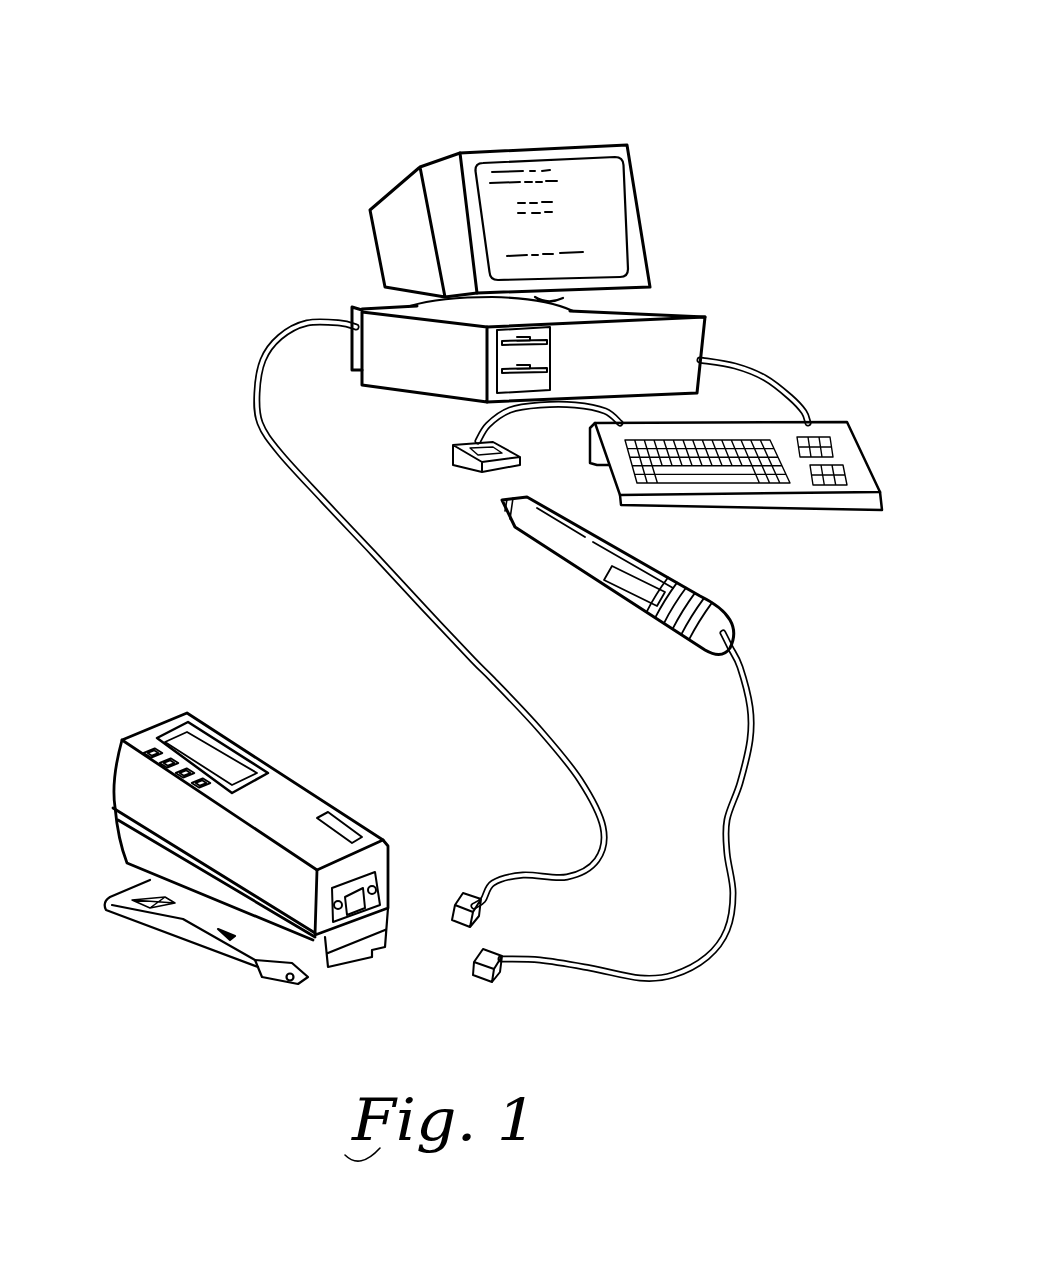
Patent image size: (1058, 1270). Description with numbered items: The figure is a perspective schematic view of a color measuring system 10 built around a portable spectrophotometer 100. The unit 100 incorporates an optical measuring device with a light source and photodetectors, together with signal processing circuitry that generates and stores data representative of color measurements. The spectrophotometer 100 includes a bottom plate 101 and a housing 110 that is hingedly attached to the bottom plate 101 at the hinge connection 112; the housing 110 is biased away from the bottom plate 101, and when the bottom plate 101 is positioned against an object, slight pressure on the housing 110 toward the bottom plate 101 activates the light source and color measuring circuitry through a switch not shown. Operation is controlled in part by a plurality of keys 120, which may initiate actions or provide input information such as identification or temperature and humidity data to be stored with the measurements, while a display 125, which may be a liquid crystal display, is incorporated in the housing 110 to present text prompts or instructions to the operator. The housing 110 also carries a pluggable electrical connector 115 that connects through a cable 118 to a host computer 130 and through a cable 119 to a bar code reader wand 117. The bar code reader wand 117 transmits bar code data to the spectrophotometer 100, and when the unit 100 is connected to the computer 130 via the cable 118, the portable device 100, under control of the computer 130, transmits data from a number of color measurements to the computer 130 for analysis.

The color measuring system 10 is at (325, 141).
The portable spectrophotometer 100 is at (309, 775).
The bottom plate 101 is at (132, 920).
The housing 110 is at (112, 803).
The hinge connection 112 is at (288, 984).
The pluggable electrical connector 115 is at (381, 890).
The bar code reader wand 117 is at (580, 574).
The cable 118 is at (485, 673).
The cable 119 is at (742, 793).
The keys 120 is at (152, 750).
The display 125 is at (198, 750).
The host computer 130 is at (652, 243).